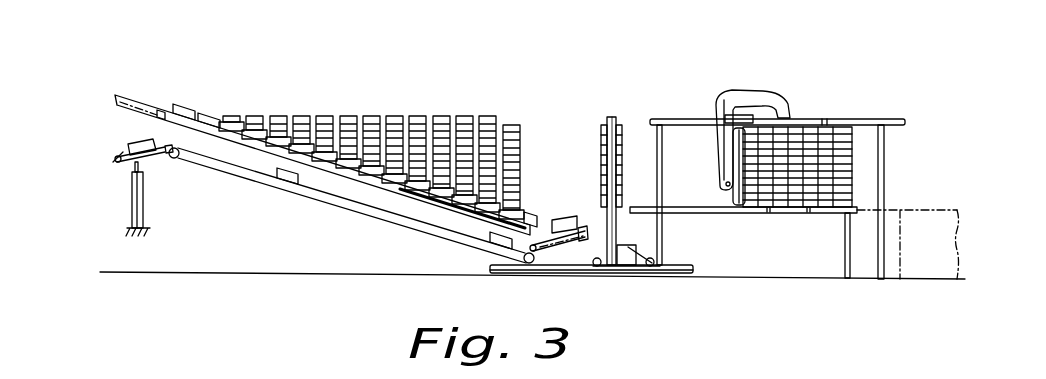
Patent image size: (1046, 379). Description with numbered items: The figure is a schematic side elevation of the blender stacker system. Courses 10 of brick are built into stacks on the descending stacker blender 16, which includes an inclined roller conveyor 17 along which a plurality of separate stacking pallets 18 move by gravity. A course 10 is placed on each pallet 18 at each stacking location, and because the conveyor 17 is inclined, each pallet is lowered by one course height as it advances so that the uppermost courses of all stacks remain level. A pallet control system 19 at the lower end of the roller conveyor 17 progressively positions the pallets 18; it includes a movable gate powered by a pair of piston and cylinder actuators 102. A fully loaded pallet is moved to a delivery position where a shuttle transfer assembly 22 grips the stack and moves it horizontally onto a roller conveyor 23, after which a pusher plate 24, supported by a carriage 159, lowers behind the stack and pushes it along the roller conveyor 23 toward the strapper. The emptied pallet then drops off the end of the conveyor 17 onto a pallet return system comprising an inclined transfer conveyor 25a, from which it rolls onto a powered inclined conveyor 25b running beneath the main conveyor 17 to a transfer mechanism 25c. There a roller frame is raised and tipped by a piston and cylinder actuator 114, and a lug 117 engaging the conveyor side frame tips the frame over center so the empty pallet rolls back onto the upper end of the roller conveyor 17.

The course 10 is at (282, 116).
The stacker blender 16 is at (371, 130).
The inclined roller conveyor 17 is at (248, 141).
The stacking pallet 18 is at (209, 114).
The pallet control system 19 is at (528, 204).
The shuttle transfer assembly 22 is at (607, 118).
The roller conveyor 23 is at (719, 215).
The pusher plate 24 is at (726, 188).
The transfer conveyor 25a is at (562, 245).
The powered inclined conveyor 25b is at (343, 203).
The transfer mechanism 25c is at (130, 93).
The piston and cylinder actuator 102 is at (443, 204).
The piston and cylinder actuator 114 is at (133, 215).
The lug 117 is at (167, 154).
The carriage 159 is at (795, 108).